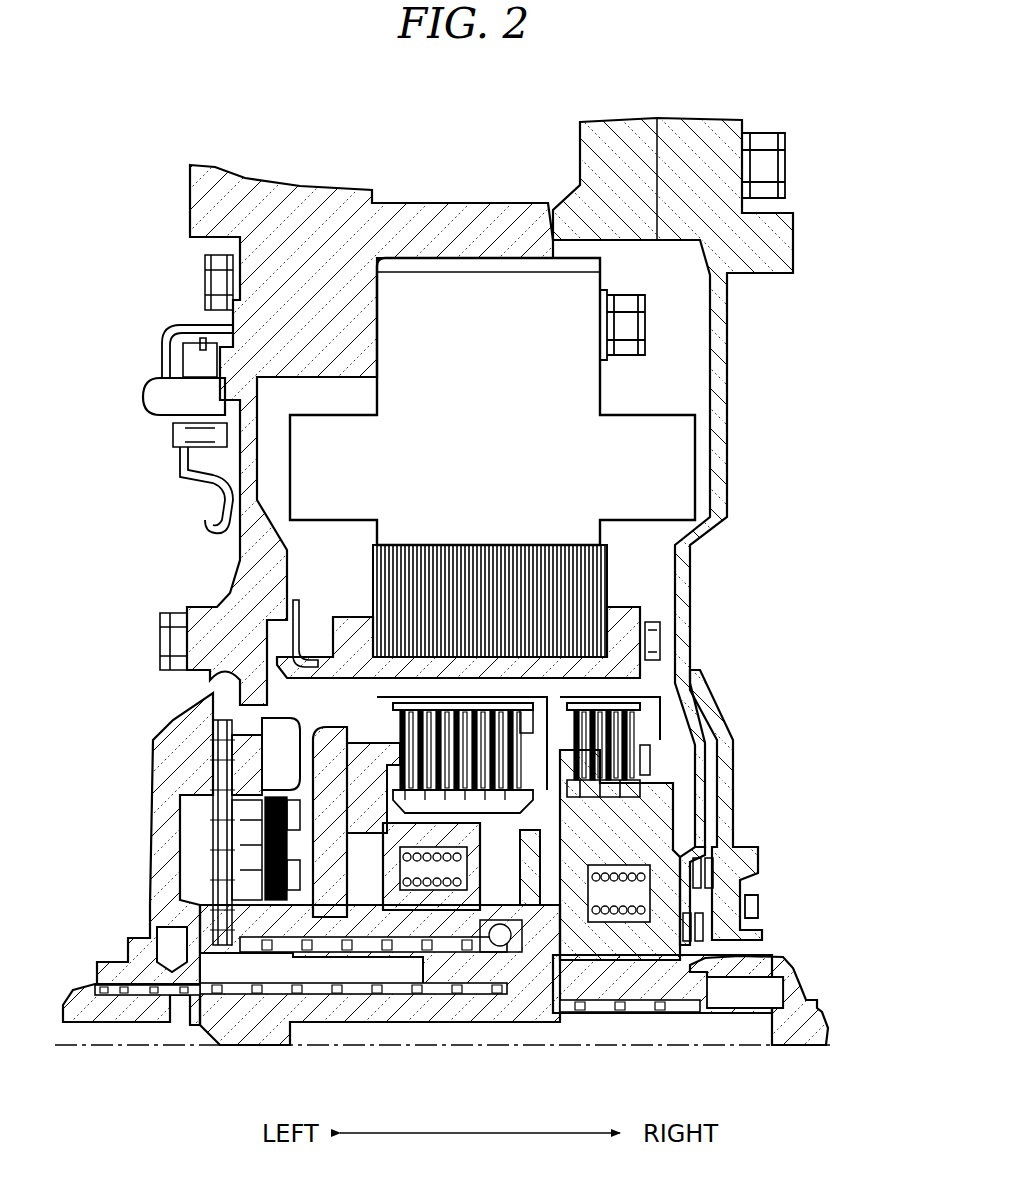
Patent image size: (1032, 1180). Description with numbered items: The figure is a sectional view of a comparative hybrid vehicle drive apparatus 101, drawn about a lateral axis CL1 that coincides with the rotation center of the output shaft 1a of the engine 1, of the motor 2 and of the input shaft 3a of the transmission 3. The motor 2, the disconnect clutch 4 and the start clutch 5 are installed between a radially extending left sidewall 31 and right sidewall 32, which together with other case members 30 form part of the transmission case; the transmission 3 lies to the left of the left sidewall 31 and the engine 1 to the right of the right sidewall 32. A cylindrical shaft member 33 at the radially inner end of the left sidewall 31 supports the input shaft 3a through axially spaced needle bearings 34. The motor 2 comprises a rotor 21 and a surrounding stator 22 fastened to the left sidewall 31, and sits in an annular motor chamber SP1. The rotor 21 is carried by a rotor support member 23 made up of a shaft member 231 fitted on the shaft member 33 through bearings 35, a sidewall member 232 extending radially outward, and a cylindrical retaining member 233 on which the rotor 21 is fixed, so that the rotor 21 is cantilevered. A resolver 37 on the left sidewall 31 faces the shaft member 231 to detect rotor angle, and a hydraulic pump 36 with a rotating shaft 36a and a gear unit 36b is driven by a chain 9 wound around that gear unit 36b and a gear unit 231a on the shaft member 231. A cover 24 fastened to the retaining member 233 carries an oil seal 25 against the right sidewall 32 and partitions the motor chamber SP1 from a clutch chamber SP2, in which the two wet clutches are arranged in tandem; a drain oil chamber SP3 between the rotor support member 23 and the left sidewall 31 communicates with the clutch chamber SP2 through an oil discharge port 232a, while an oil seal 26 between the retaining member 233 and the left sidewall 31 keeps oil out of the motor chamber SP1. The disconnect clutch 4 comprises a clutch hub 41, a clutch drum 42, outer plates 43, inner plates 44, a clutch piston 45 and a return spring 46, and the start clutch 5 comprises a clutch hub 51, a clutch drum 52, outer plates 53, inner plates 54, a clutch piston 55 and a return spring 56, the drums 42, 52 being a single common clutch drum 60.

The hybrid vehicle drive apparatus 101 is at (520, 106).
The case members 30 is at (436, 200).
The motor 2 is at (690, 345).
The stator 22 is at (600, 386).
The motor chamber SP1 is at (690, 390).
The right sidewall 32 is at (727, 452).
The hydraulic pump 36 is at (145, 372).
The rotating shaft 36a is at (160, 420).
The gear unit 36b is at (210, 520).
The common clutch drum 60 is at (400, 490).
The clutch drum 42 is at (530, 690).
The clutch drum 52 is at (445, 535).
The rotor 21 is at (607, 588).
The retaining member 233 is at (548, 665).
The transmission 3 is at (111, 619).
The engine 1 is at (822, 616).
The left sidewall 31 is at (235, 590).
The oil seal 26 is at (287, 614).
The outer plates 53 is at (375, 660).
The start clutch 5 is at (366, 692).
The oil discharge port 232a is at (300, 692).
The drain oil chamber SP3 is at (225, 712).
The disconnect clutch 4 is at (648, 710).
The outer plates 43 is at (655, 720).
The clutch chamber SP2 is at (615, 742).
The inner plates 44 is at (610, 748).
The cover 24 is at (712, 782).
The clutch hub 41 is at (680, 826).
The chain 9 is at (200, 802).
The rotor support member 23 is at (262, 830).
The resolver 37 is at (258, 842).
The sidewall member 232 is at (272, 862).
The inner plates 54 is at (498, 760).
The oil seal 25 is at (752, 903).
The output shaft 1a is at (770, 960).
The axis CL1 is at (469, 1045).
The bearings 34 is at (120, 995).
The gear unit 231a is at (245, 990).
The input shaft 3a is at (214, 1038).
The bearings 35 is at (285, 1000).
The shaft member 231 is at (300, 950).
The shaft member 33 is at (350, 962).
The clutch piston 55 is at (432, 890).
The return spring 56 is at (490, 947).
The clutch hub 51 is at (550, 905).
The clutch piston 45 is at (598, 925).
The return spring 46 is at (635, 925).